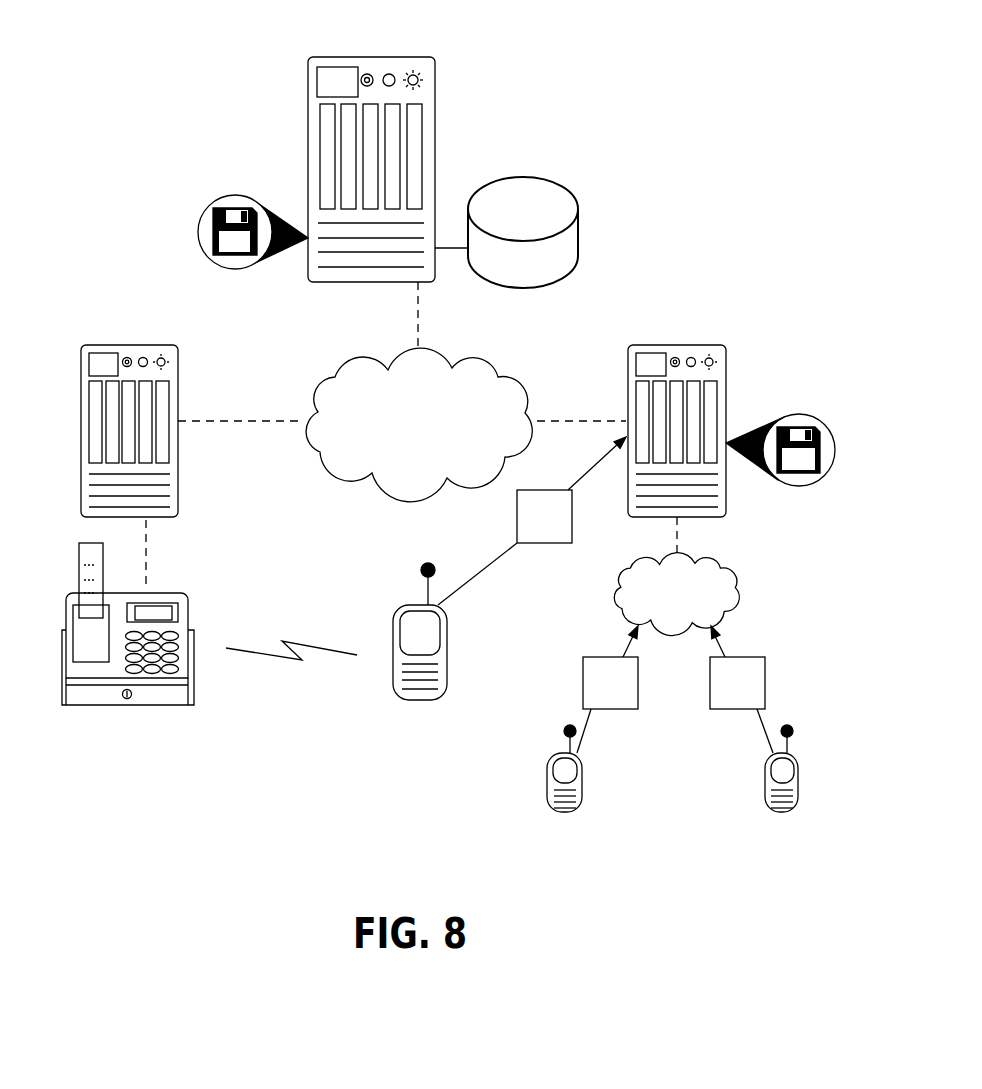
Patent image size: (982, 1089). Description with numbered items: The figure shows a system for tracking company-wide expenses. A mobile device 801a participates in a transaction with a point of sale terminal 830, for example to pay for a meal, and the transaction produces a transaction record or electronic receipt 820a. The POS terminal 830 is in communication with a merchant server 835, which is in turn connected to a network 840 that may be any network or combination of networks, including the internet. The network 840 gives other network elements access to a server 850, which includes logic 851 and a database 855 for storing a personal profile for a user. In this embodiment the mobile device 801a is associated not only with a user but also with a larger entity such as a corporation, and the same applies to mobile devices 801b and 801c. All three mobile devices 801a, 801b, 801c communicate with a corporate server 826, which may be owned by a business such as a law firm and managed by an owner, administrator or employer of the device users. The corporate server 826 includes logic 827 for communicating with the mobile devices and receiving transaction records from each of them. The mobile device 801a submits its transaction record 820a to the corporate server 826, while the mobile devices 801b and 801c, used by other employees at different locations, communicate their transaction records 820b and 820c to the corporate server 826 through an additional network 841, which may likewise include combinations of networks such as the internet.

The server 850 is at (418, 146).
The logic 851 is at (221, 207).
The database 855 is at (550, 221).
The merchant server 835 is at (178, 450).
The point of sale terminal 830 is at (128, 646).
The network 840 is at (419, 425).
The additional network 841 is at (676, 594).
The corporate server 826 is at (638, 420).
The logic 827 is at (793, 435).
The transaction record 820a is at (517, 521).
The transaction record 820b is at (567, 670).
The transaction record 820c is at (778, 667).
The mobile device 801a is at (379, 657).
The mobile device 801b is at (517, 791).
The mobile device 801c is at (730, 791).